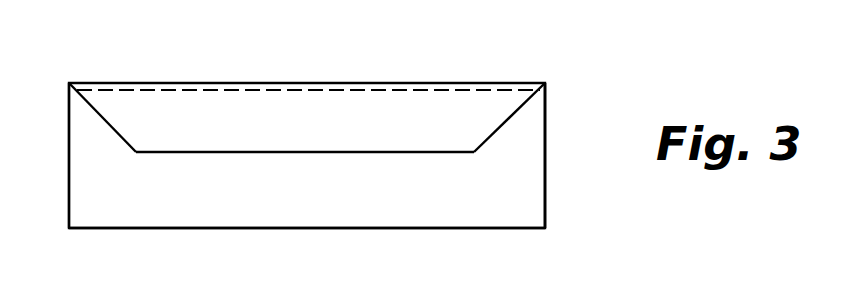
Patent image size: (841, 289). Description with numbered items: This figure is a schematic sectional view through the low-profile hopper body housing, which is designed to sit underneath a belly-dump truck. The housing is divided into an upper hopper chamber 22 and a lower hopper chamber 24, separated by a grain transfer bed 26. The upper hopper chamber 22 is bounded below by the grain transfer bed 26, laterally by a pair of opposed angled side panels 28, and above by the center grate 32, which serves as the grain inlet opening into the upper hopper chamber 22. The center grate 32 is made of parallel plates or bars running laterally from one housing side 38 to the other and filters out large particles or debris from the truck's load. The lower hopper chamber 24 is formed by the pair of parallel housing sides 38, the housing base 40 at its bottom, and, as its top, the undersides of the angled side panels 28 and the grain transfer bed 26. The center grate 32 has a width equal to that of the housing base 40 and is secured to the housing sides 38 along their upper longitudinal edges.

The upper hopper chamber 22 is at (363, 107).
The lower hopper chamber 24 is at (510, 163).
The grain transfer bed 26 is at (232, 152).
The angled side panels 28 is at (110, 123).
The center grate 32 is at (227, 90).
The housing sides 38 is at (69, 190).
The housing base 40 is at (267, 228).